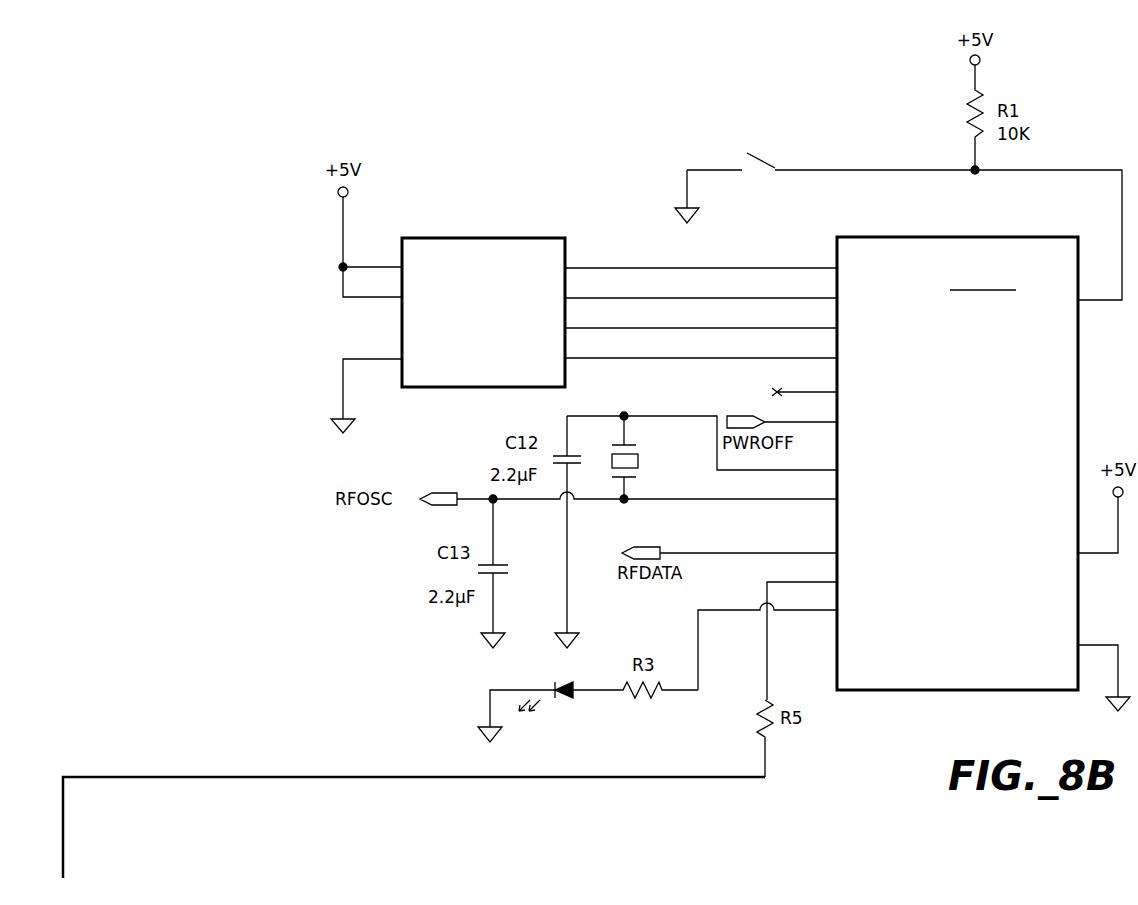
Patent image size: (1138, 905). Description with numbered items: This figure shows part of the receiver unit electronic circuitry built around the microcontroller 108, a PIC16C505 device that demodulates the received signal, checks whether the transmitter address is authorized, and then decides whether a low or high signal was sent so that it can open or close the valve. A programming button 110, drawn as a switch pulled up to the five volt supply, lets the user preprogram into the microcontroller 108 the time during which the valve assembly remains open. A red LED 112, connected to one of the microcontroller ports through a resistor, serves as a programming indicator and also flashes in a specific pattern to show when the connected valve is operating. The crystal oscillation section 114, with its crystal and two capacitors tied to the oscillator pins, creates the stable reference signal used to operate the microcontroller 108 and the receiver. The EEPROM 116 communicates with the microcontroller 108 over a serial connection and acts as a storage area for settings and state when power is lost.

The microcontroller 108 is at (908, 247).
The programming button 110 is at (728, 140).
The red LED 112 is at (567, 700).
The crystal oscillation section 114 is at (638, 460).
The EEPROM 116 is at (483, 248).